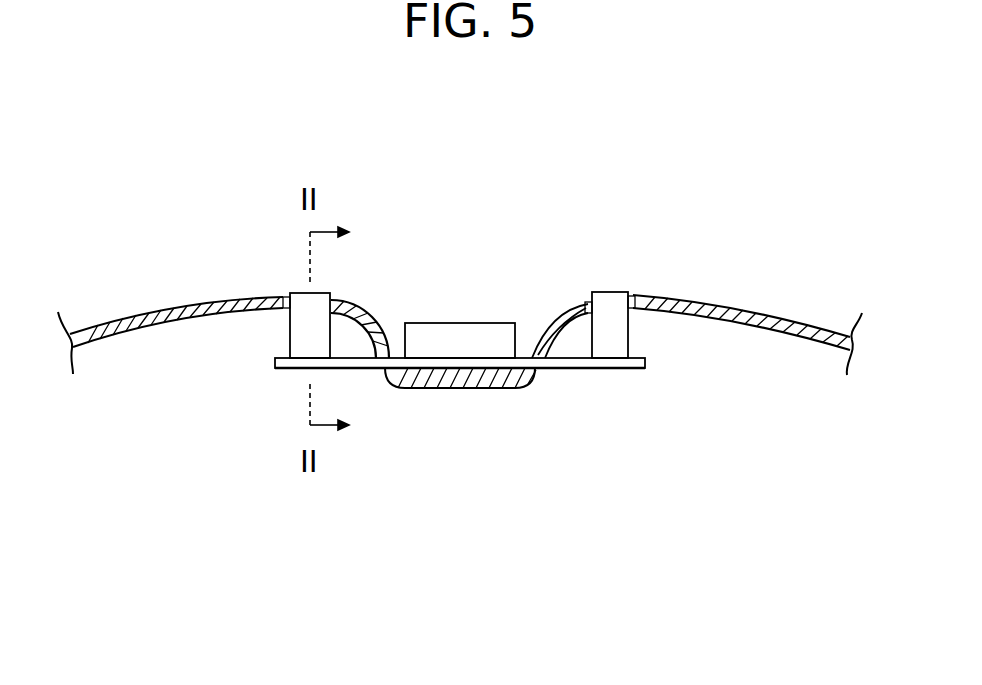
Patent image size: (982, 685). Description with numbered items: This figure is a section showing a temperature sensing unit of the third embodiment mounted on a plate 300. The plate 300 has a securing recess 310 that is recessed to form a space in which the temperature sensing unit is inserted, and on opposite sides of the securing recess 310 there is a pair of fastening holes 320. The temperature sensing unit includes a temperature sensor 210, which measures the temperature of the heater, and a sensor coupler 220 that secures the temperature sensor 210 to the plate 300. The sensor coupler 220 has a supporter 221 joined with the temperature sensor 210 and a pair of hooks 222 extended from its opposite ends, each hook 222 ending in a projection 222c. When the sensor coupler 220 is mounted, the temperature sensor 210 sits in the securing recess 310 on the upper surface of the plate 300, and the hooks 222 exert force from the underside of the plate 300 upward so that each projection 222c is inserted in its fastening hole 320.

The temperature sensor 210 is at (447, 332).
The sensor coupler 220 is at (605, 380).
The supporter 221 is at (645, 364).
The hook 222 is at (303, 336).
The projection 222c is at (612, 297).
The plate 300 is at (750, 317).
The securing recess 310 is at (528, 345).
The fastening hole 320 is at (635, 294).